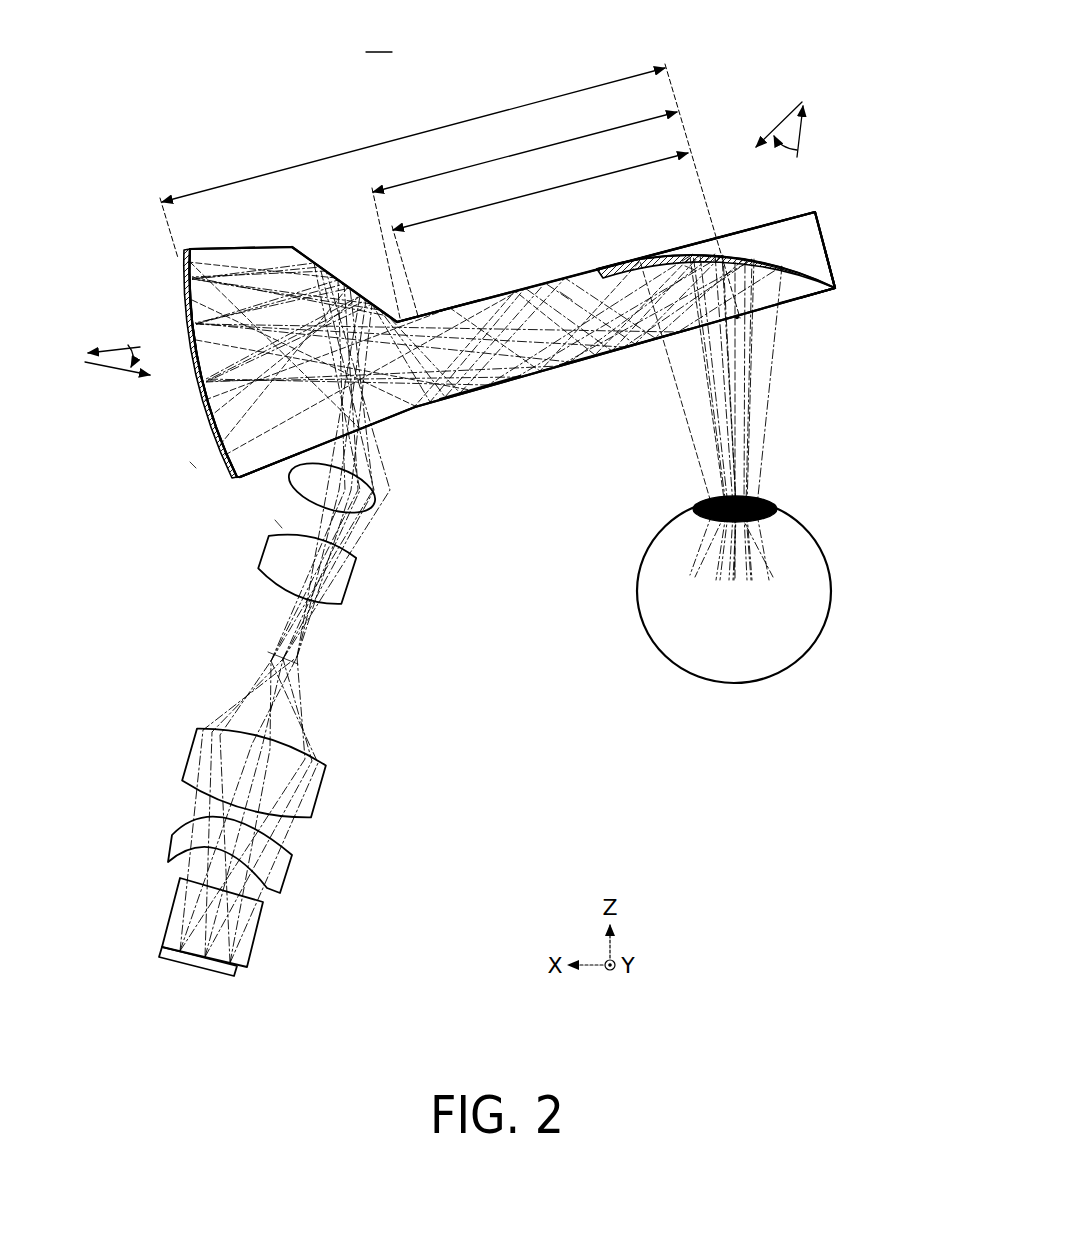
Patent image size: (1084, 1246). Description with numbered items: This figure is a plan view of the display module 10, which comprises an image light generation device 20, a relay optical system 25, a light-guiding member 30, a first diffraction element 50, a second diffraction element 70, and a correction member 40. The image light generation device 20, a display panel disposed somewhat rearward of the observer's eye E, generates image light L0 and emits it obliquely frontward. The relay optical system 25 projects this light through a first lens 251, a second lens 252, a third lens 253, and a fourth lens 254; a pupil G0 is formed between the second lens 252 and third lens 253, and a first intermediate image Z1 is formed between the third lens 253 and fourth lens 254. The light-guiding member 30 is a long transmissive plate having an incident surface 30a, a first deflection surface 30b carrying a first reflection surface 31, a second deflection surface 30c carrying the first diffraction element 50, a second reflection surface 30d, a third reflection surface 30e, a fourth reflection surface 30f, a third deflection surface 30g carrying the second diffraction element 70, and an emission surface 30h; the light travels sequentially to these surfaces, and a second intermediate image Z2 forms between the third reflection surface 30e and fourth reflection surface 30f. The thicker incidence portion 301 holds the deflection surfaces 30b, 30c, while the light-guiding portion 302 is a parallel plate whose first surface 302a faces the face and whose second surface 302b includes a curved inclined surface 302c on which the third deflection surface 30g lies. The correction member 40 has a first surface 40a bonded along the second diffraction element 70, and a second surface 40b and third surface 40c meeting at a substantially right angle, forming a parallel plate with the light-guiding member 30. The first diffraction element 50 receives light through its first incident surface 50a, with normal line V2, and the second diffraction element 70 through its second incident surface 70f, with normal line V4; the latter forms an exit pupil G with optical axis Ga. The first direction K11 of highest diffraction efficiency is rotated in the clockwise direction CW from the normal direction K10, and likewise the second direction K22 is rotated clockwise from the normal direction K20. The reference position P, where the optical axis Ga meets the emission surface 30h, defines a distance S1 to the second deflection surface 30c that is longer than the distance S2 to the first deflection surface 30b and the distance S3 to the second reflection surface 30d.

The display module 10 is at (386, 116).
The image light generation device 20 is at (200, 962).
The relay optical system 25 is at (340, 708).
The first lens 251 is at (285, 862).
The second lens 252 is at (318, 780).
The third lens 253 is at (345, 578).
The fourth lens 254 is at (372, 498).
The light-guiding member 30 is at (515, 400).
The incidence portion 301 is at (235, 258).
The light-guiding portion 302 is at (562, 366).
The first surface 302a is at (482, 388).
The second surface 302b is at (441, 310).
The inclined surface 302c is at (833, 270).
The incident surface 30a is at (367, 428).
The first deflection surface 30b is at (333, 207).
The first reflection surface 31 is at (335, 278).
The second deflection surface 30c is at (233, 478).
The second reflection surface 30d is at (282, 470).
The third reflection surface 30e is at (514, 290).
The fourth reflection surface 30f is at (622, 348).
The third deflection surface 30g is at (695, 268).
The emission surface 30h is at (810, 298).
The correction member 40 is at (812, 255).
The first surface 40a is at (828, 292).
The second surface 40b is at (730, 234).
The third surface 40c is at (818, 218).
The first diffraction element 50 is at (186, 300).
The first incident surface 50a is at (206, 410).
The second diffraction element 70 is at (730, 260).
The second incident surface 70f is at (780, 300).
The eye E is at (757, 683).
The exit pupil G is at (706, 485).
The optical axis Ga is at (736, 400).
The pupil G0 is at (278, 525).
The image light L0 is at (257, 918).
The reference position P is at (735, 319).
The distance S1 is at (450, 191).
The distance S2 is at (524, 215).
The distance S3 is at (540, 234).
The normal line V2 is at (193, 465).
The normal line V4 is at (690, 268).
The first intermediate image Z1 is at (260, 657).
The second intermediate image Z2 is at (566, 296).
The normal line direction K10 is at (118, 343).
The first direction K11 is at (112, 372).
The normal line direction K20 is at (810, 135).
The second direction K22 is at (790, 118).
The clockwise direction CW is at (130, 347).